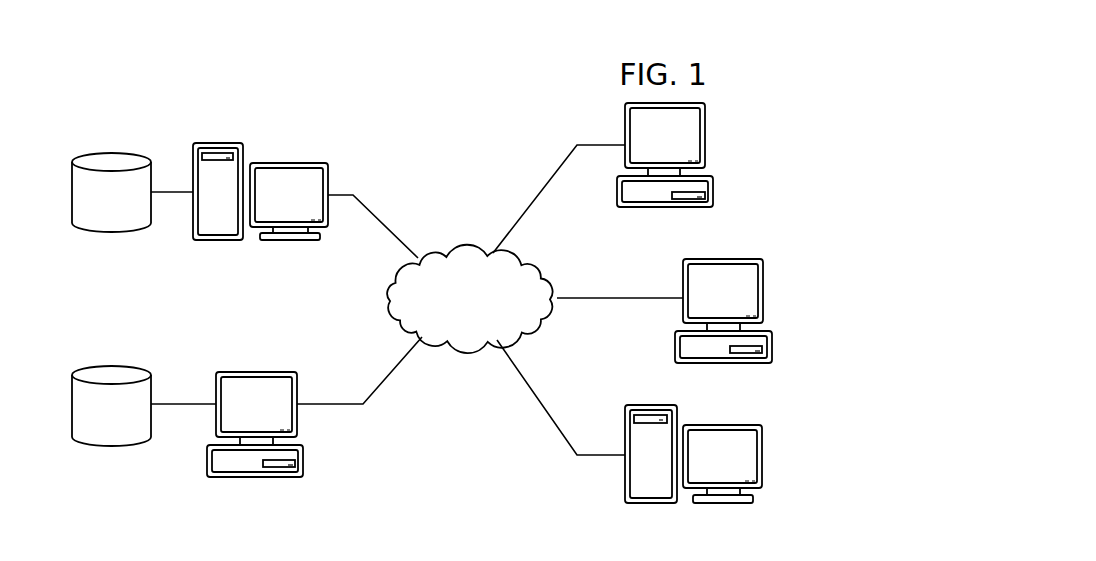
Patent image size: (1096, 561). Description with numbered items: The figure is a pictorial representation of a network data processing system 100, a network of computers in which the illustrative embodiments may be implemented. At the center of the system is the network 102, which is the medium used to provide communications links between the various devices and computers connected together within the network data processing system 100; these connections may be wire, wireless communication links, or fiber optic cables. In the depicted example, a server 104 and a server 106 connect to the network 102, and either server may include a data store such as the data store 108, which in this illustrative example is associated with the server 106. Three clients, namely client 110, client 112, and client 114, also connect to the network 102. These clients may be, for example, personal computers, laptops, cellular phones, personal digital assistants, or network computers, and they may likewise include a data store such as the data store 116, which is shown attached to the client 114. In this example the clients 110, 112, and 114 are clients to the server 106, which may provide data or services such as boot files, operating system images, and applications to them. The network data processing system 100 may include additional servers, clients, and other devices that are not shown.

The network data processing system 100 is at (360, 119).
The network 102 is at (463, 245).
The server 104 is at (762, 457).
The server 106 is at (217, 142).
The data store 108 is at (112, 232).
The client 110 is at (713, 192).
The client 112 is at (772, 345).
The client 114 is at (303, 462).
The data store 116 is at (112, 445).